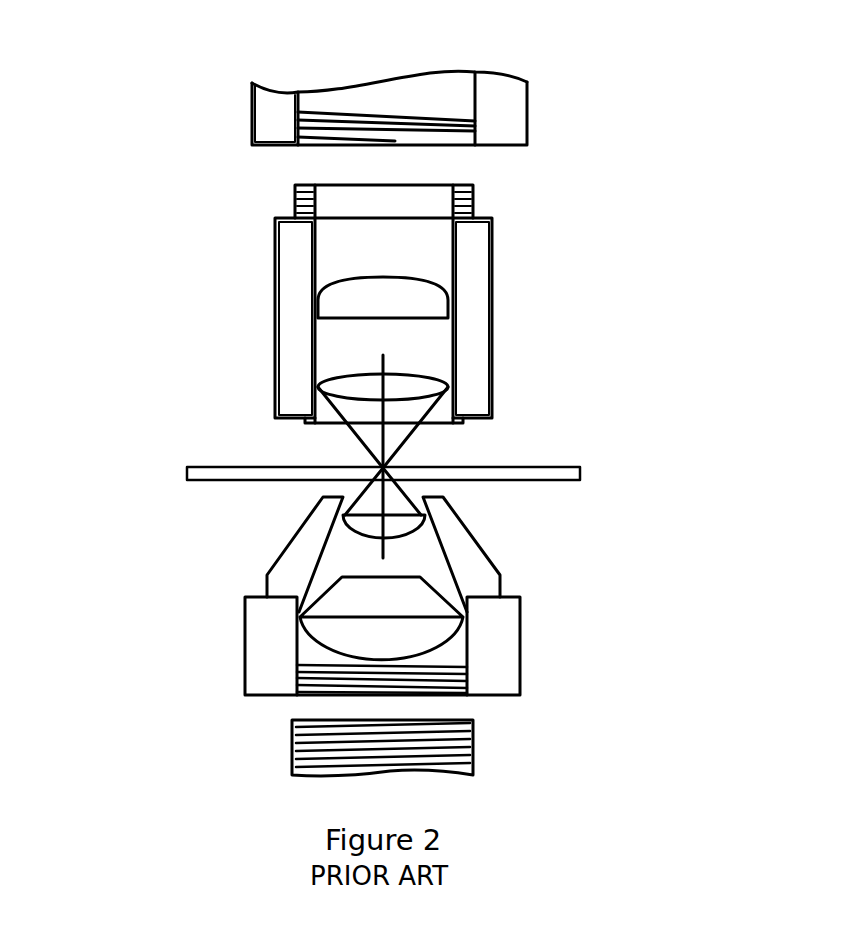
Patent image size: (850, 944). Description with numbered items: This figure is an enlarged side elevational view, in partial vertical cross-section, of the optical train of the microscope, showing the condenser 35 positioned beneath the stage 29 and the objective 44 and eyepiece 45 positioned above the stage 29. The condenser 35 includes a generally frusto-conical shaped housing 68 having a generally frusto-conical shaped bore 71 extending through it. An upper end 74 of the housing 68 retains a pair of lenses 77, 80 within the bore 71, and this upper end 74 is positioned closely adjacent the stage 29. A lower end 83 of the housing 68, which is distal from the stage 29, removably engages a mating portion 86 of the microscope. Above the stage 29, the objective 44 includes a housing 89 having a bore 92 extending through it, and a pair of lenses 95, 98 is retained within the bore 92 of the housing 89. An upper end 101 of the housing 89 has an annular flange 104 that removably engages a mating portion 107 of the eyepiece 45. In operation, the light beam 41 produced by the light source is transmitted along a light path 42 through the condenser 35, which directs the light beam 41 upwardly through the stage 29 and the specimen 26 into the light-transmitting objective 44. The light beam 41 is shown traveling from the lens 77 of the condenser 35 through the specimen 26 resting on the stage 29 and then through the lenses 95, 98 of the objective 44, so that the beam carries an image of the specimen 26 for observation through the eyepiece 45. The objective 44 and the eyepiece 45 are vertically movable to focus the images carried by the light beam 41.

The eyepiece 45 is at (535, 90).
The mating portion of the eyepiece 107 is at (290, 131).
The annular flange 104 is at (490, 192).
The upper end of housing 101 is at (503, 247).
The objective 44 is at (559, 274).
The housing 89 is at (263, 284).
The bore 92 is at (327, 337).
The lens 95 is at (345, 295).
The lens 98 is at (322, 385).
The light path 42 is at (388, 360).
The light beam 41 is at (355, 441).
The specimen 26 is at (400, 462).
The stage 29 is at (567, 455).
The lens 77 is at (360, 508).
The housing 68 is at (273, 548).
The upper end of the housing 74 is at (483, 525).
The bore 71 is at (302, 643).
The lower end of housing 83 is at (231, 662).
The lens 80 is at (445, 639).
The condenser 35 is at (554, 612).
The mating portion 86 is at (483, 745).